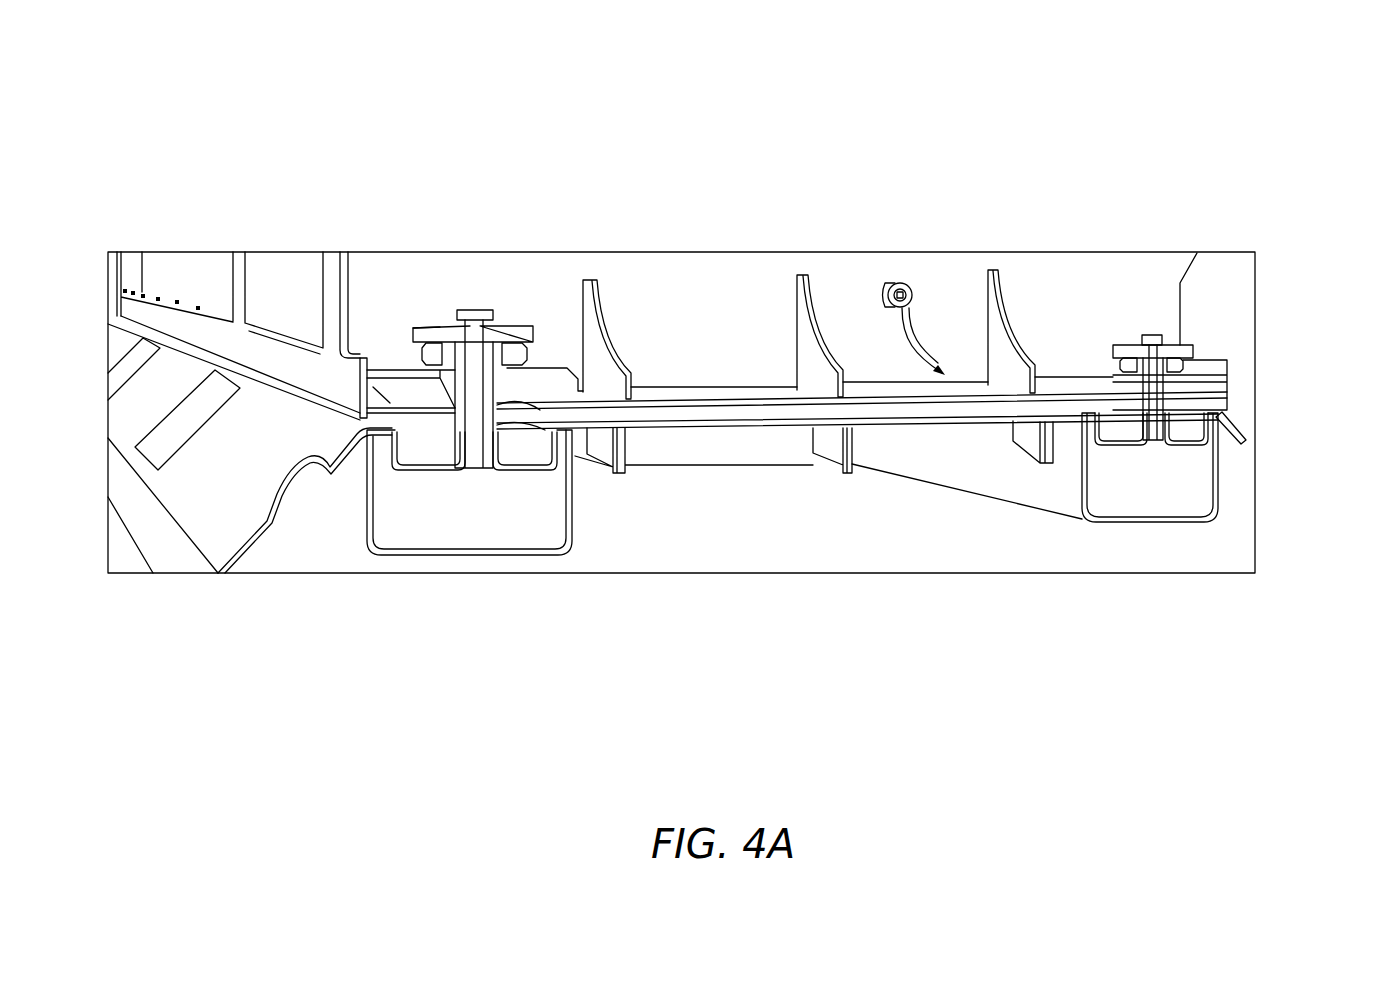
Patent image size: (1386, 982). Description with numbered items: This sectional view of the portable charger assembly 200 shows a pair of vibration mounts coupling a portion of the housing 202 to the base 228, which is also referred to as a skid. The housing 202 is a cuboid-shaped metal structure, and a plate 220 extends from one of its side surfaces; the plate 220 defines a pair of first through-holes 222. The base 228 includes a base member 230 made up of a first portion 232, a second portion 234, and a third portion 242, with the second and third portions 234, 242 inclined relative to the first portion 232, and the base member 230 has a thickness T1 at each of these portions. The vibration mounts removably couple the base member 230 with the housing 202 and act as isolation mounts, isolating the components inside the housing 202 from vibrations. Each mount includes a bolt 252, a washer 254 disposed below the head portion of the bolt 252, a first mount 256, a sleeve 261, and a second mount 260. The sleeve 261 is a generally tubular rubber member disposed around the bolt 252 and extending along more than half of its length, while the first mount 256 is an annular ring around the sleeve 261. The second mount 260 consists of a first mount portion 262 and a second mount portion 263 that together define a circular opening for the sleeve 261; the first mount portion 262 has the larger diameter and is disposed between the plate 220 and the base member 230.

The portable charger assembly 200 is at (1262, 210).
The housing 202 is at (1198, 285).
The plate 220 is at (690, 400).
The first through-holes 222 is at (455, 412).
The base 228 is at (127, 548).
The base member 230 is at (1247, 428).
The first portion 232 is at (737, 415).
The second portion 234 is at (197, 488).
The third portion 242 is at (1230, 418).
The bolt 252 is at (475, 312).
The washer 254 is at (503, 328).
The first mount 256 is at (425, 334).
The second mount 260 is at (432, 393).
The sleeve 261 is at (485, 413).
The first mount portion 262 is at (517, 413).
The second mount portion 263 is at (440, 325).
The thickness T1 is at (215, 517).